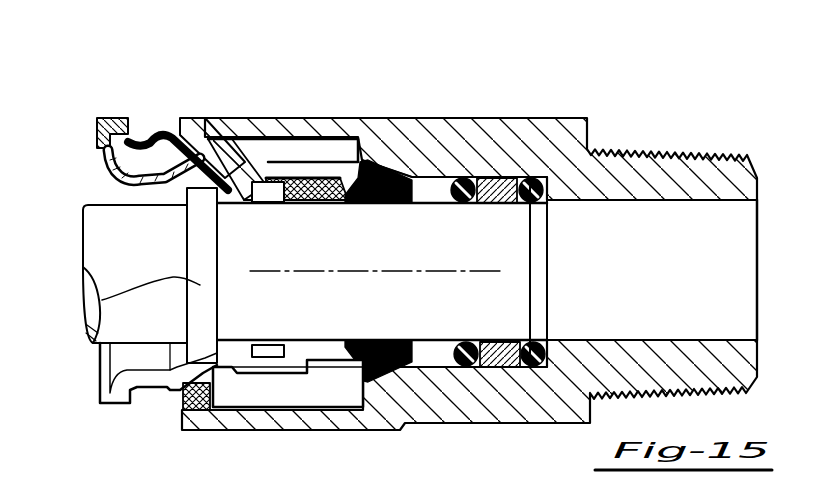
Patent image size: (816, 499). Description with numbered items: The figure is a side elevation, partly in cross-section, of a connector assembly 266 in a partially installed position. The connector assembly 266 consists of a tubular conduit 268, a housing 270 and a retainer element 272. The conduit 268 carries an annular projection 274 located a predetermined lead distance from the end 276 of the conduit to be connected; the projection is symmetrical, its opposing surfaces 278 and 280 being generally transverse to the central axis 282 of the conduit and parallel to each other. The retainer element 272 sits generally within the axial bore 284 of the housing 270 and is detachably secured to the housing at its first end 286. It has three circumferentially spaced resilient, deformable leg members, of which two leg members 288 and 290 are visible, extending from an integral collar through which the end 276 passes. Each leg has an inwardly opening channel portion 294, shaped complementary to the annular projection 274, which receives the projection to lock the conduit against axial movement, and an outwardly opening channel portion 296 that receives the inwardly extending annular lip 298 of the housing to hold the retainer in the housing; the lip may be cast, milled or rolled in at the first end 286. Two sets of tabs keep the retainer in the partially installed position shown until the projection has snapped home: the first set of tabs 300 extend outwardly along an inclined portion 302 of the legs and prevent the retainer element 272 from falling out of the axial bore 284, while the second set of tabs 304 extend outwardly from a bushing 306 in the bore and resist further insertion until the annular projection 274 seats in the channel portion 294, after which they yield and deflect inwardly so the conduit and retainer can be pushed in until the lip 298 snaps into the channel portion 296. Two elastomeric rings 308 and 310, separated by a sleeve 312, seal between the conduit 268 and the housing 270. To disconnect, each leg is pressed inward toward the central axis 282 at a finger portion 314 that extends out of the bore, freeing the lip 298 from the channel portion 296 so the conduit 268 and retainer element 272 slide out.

The connector assembly 266 is at (352, 110).
The tubular conduit 268 is at (83, 247).
The housing 270 is at (503, 122).
The retainer element 272 is at (323, 202).
The annular projection 274 is at (84, 290).
The end of the conduit 276 is at (540, 292).
The opposing surface of the annular projection 278 is at (178, 202).
The opposing surface of the annular projection 280 is at (225, 203).
The central axis 282 is at (400, 275).
The axial bore 284 is at (303, 407).
The first end of the housing 286 is at (197, 432).
The leg member 288 is at (322, 150).
The leg member 290 is at (330, 352).
The inwardly opening channel portion 294 is at (290, 190).
The outwardly opening channel portion 296 is at (205, 402).
The annular lip 298 is at (147, 140).
The first set of tabs 300 is at (233, 135).
The inclined portion 302 is at (125, 184).
The second set of tabs 304 is at (367, 167).
The bushing 306 is at (387, 203).
The elastomeric ring 308 is at (470, 203).
The elastomeric ring 310 is at (507, 203).
The sleeve 312 is at (503, 338).
The finger portion 314 is at (118, 118).